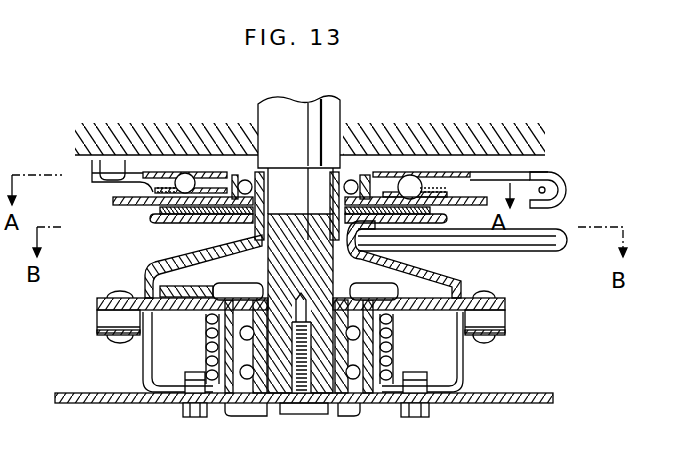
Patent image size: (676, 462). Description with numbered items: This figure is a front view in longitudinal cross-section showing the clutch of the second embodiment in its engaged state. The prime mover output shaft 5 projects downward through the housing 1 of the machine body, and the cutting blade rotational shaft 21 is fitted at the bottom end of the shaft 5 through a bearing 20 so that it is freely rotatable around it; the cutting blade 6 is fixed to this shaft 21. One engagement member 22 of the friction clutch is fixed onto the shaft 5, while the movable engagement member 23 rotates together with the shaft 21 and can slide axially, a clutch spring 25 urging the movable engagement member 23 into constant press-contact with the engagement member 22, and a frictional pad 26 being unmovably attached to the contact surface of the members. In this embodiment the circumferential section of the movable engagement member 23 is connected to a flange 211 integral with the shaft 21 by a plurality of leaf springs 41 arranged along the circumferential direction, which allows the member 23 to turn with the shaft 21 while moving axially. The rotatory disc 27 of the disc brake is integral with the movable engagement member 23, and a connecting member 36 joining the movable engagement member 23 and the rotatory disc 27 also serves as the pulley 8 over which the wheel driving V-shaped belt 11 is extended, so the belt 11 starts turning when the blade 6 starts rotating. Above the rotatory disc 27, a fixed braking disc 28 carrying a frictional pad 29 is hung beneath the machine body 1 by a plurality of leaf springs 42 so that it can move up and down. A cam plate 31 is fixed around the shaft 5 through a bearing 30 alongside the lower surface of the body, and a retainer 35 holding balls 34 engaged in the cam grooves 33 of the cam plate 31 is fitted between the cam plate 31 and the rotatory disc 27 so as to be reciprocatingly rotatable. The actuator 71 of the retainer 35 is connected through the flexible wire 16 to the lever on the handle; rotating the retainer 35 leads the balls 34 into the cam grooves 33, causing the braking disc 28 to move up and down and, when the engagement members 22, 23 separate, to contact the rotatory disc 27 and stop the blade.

The housing 1 is at (82, 161).
The output shaft 5 is at (272, 115).
The cutting blade 6 is at (100, 403).
The pulley 8 is at (434, 259).
The V-shaped belt 11 is at (543, 242).
The flexible wire 16 is at (545, 189).
The bearing 20 is at (238, 403).
The cutting blade rotational shaft 21 is at (147, 373).
The flange 211 is at (513, 358).
The engagement member 22 is at (173, 287).
The movable engagement member 23 is at (166, 312).
The clutch spring 25 is at (219, 403).
The frictional pad 26 is at (147, 283).
The rotatory disc 27 is at (150, 223).
The fixed braking disc 28 is at (117, 200).
The frictional pad 29 is at (170, 215).
The bearing 30 is at (351, 178).
The cam plate 31 is at (462, 196).
The cam grooves 33 is at (402, 175).
The balls 34 is at (452, 182).
The retainer 35 is at (478, 174).
The connecting member 36 is at (440, 258).
The leaf springs 41 is at (97, 318).
The leaf springs 42 is at (142, 154).
The actuator 71 is at (568, 182).